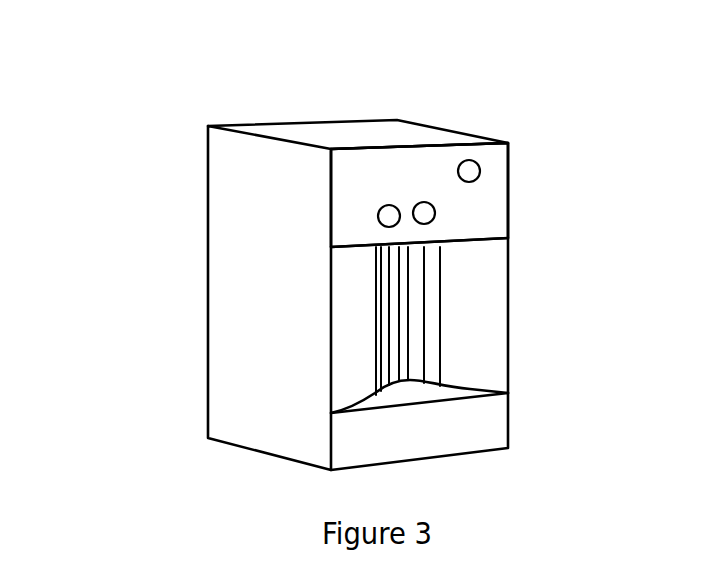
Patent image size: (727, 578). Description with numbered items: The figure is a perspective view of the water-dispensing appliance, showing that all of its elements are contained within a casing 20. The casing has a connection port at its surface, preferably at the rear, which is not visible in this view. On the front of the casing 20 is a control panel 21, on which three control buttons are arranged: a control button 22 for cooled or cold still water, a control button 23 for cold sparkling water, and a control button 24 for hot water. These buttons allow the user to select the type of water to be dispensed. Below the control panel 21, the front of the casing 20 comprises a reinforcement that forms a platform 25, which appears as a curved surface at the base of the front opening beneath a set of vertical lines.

The casing 20 is at (270, 237).
The control panel 21 is at (352, 170).
The control button for cooled or cold still water 22 is at (389, 205).
The control button for cold sparkling water 23 is at (425, 203).
The control button for hot water 24 is at (469, 171).
The platform 25 is at (508, 395).